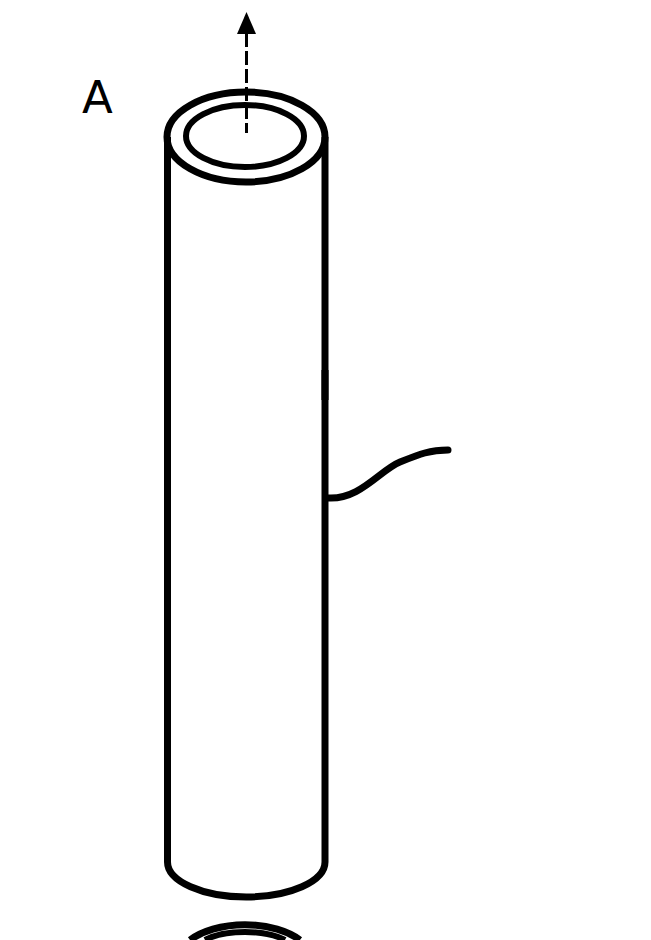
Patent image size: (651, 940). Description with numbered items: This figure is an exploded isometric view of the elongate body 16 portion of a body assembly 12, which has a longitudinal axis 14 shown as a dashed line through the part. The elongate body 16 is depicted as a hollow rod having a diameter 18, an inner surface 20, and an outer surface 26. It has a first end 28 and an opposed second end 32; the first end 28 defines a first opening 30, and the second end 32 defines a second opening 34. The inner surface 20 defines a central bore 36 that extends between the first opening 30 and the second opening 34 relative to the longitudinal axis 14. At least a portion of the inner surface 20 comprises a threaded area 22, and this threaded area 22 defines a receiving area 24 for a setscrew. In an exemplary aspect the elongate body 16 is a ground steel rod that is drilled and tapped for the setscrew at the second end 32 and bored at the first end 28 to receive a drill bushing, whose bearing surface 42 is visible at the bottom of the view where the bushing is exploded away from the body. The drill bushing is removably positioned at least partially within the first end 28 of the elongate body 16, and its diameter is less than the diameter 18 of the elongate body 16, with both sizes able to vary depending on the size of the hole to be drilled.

The body assembly 12 is at (368, 44).
The longitudinal axis 14 is at (243, 55).
The elongate body 16 is at (152, 405).
The diameter 18 is at (150, 139).
The inner surface 20 is at (305, 397).
The threaded area 22 is at (305, 200).
The receiving area 24 is at (211, 147).
The outer surface 26 is at (404, 470).
The first end 28 is at (165, 863).
The first opening 30 is at (300, 890).
The second end 32 is at (303, 155).
The second opening 34 is at (287, 138).
The central bore 36 is at (283, 131).
The bearing surface 42 is at (214, 930).